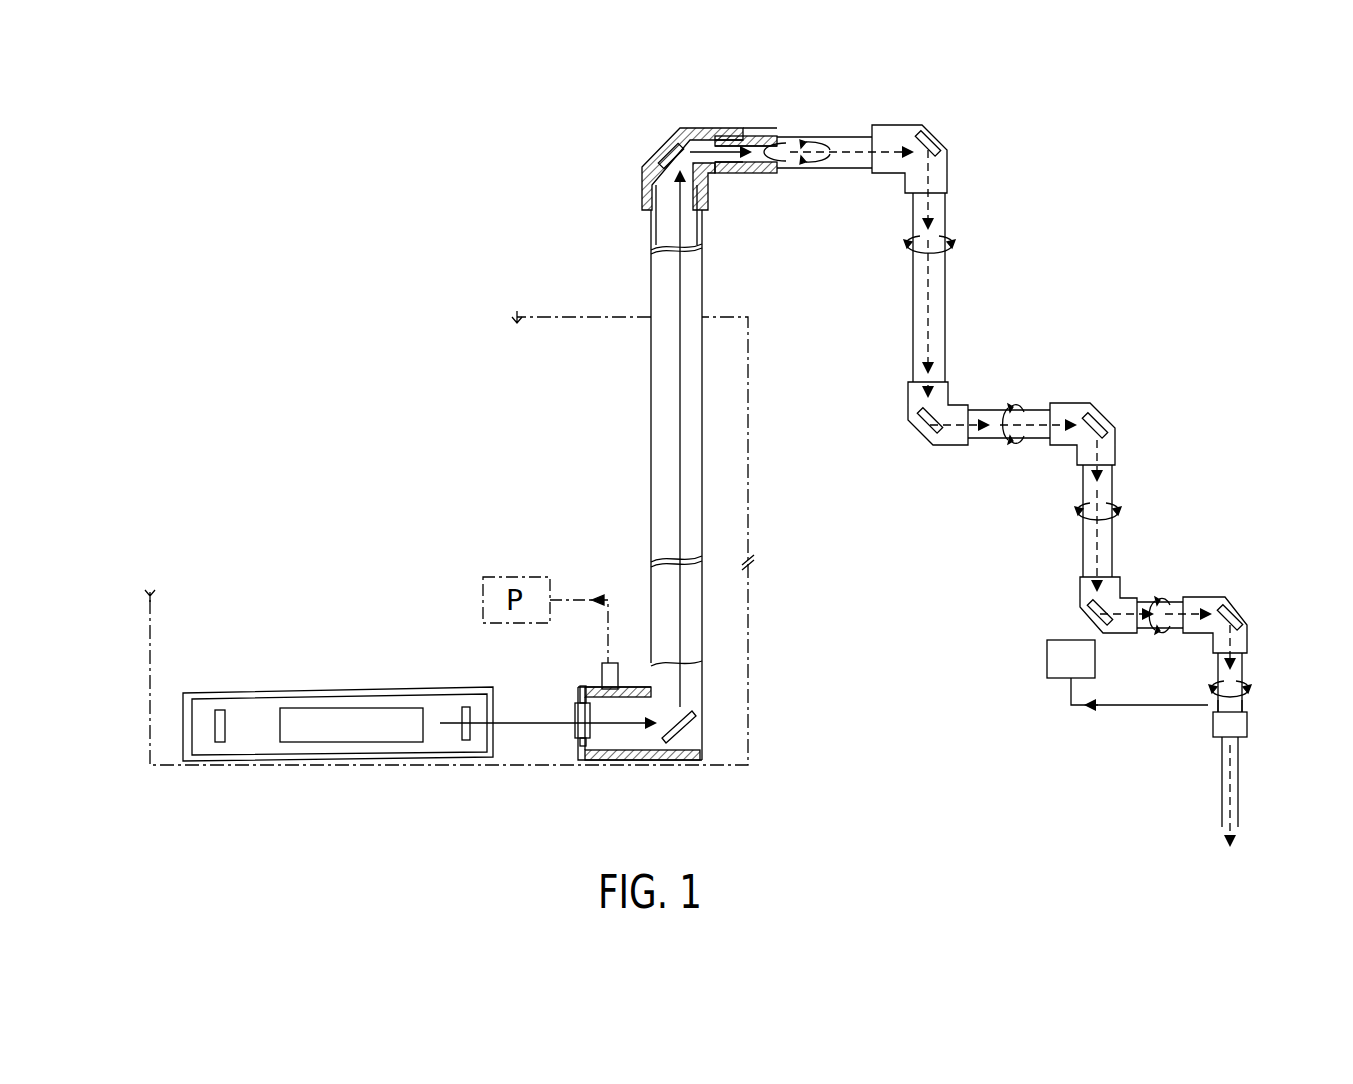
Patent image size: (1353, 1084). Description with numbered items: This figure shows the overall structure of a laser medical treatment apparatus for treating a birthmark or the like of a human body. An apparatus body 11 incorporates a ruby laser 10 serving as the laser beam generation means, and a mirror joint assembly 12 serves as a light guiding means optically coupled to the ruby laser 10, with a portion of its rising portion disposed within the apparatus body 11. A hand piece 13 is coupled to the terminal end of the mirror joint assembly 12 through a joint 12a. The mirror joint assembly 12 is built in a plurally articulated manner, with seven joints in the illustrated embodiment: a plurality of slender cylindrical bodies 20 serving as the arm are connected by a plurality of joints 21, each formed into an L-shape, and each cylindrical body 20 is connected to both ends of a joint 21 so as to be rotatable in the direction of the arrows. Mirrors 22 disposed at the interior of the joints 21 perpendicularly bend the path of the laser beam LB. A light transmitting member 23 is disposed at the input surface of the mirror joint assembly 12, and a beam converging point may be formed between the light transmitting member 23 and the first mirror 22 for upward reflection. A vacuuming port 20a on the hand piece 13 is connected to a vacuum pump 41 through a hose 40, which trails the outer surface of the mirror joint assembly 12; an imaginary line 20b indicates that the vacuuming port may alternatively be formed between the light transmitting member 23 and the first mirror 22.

The ruby laser 10 is at (362, 668).
The apparatus body 11 is at (540, 317).
The mirror joint assembly 12 is at (920, 472).
The joint 12a is at (1247, 728).
The hand piece 13 is at (1222, 790).
The cylindrical body 20 is at (832, 136).
The vacuuming port 20a is at (1208, 707).
The imaginary line 20b is at (617, 660).
The joint 21 is at (700, 125).
The mirror 22 is at (660, 150).
The light transmitting member 23 is at (578, 705).
The hose 40 is at (1105, 708).
The vacuum pump 41 is at (1047, 645).
The laser beam LB is at (700, 218).